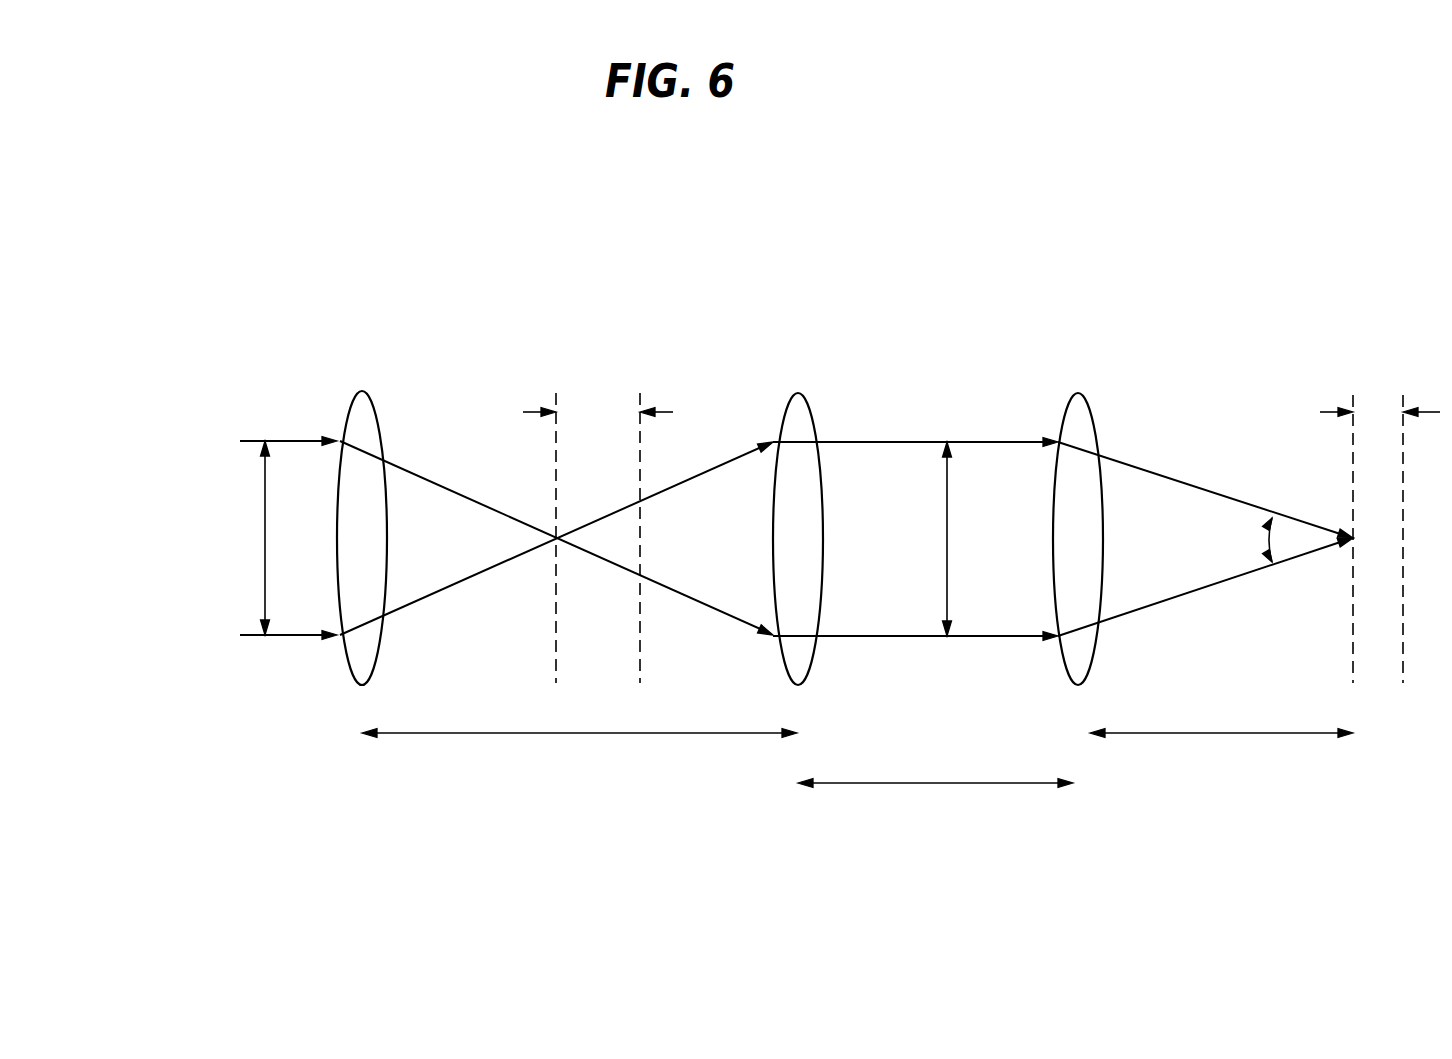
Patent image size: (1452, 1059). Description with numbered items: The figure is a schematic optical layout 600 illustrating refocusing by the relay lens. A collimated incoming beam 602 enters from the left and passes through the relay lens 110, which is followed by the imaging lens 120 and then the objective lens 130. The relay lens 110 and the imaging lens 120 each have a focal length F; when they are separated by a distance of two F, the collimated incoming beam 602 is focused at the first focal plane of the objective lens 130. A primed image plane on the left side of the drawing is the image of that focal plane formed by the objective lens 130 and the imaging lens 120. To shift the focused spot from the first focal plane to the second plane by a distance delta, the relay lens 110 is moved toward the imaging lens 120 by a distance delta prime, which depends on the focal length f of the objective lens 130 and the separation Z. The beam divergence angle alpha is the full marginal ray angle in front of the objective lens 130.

The optical system 600 is at (703, 258).
The collimated incoming beam 602 is at (278, 636).
The relay lens 110 is at (378, 660).
The imaging lens 120 is at (788, 672).
The objective lens 130 is at (1060, 660).